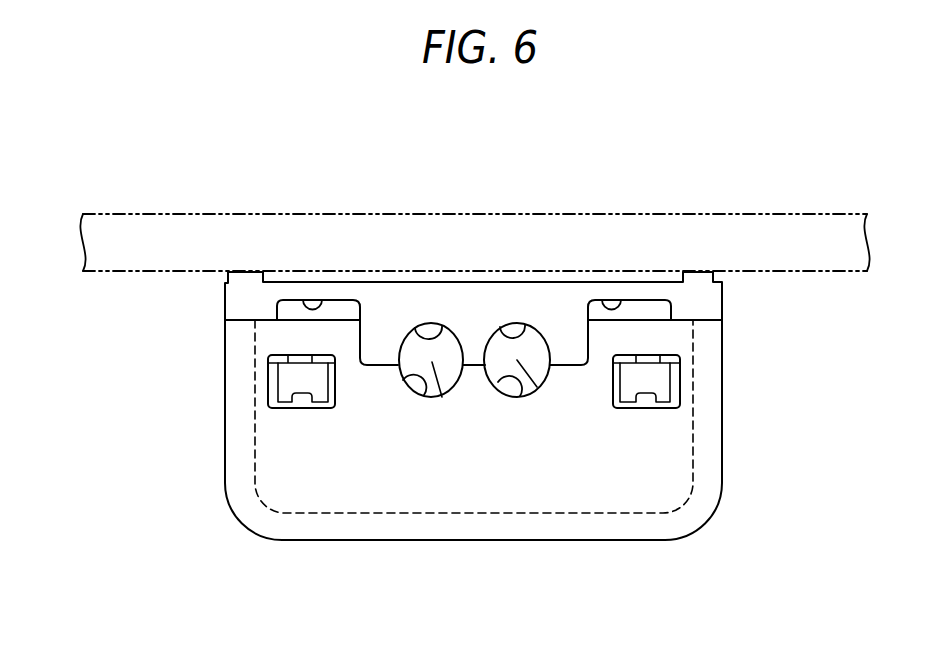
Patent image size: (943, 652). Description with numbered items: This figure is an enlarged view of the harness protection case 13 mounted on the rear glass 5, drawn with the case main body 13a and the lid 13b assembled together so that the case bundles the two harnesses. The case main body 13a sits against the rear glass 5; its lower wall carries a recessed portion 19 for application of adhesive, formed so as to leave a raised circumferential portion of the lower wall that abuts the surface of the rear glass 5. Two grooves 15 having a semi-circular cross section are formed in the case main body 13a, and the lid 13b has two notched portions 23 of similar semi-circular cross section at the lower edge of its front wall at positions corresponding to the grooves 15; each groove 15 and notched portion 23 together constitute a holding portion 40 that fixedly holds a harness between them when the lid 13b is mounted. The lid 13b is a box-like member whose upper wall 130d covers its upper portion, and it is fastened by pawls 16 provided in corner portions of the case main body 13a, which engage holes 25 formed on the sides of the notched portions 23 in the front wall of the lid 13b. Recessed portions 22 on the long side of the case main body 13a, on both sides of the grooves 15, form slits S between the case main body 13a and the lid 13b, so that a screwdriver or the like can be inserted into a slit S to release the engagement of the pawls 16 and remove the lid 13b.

The rear glass 5 is at (717, 216).
The harness protection case 13 is at (460, 382).
The case main body 13a is at (522, 261).
The lid 13b is at (521, 463).
The groove 15 is at (446, 387).
The pawl 16 is at (474, 462).
The recessed portion 19 is at (287, 281).
The recessed portion 22 is at (320, 299).
The notched portion 23 is at (423, 394).
The hole 25 is at (330, 408).
The holding portion 40 is at (442, 397).
The upper wall 130d is at (603, 520).
The slit S is at (340, 308).